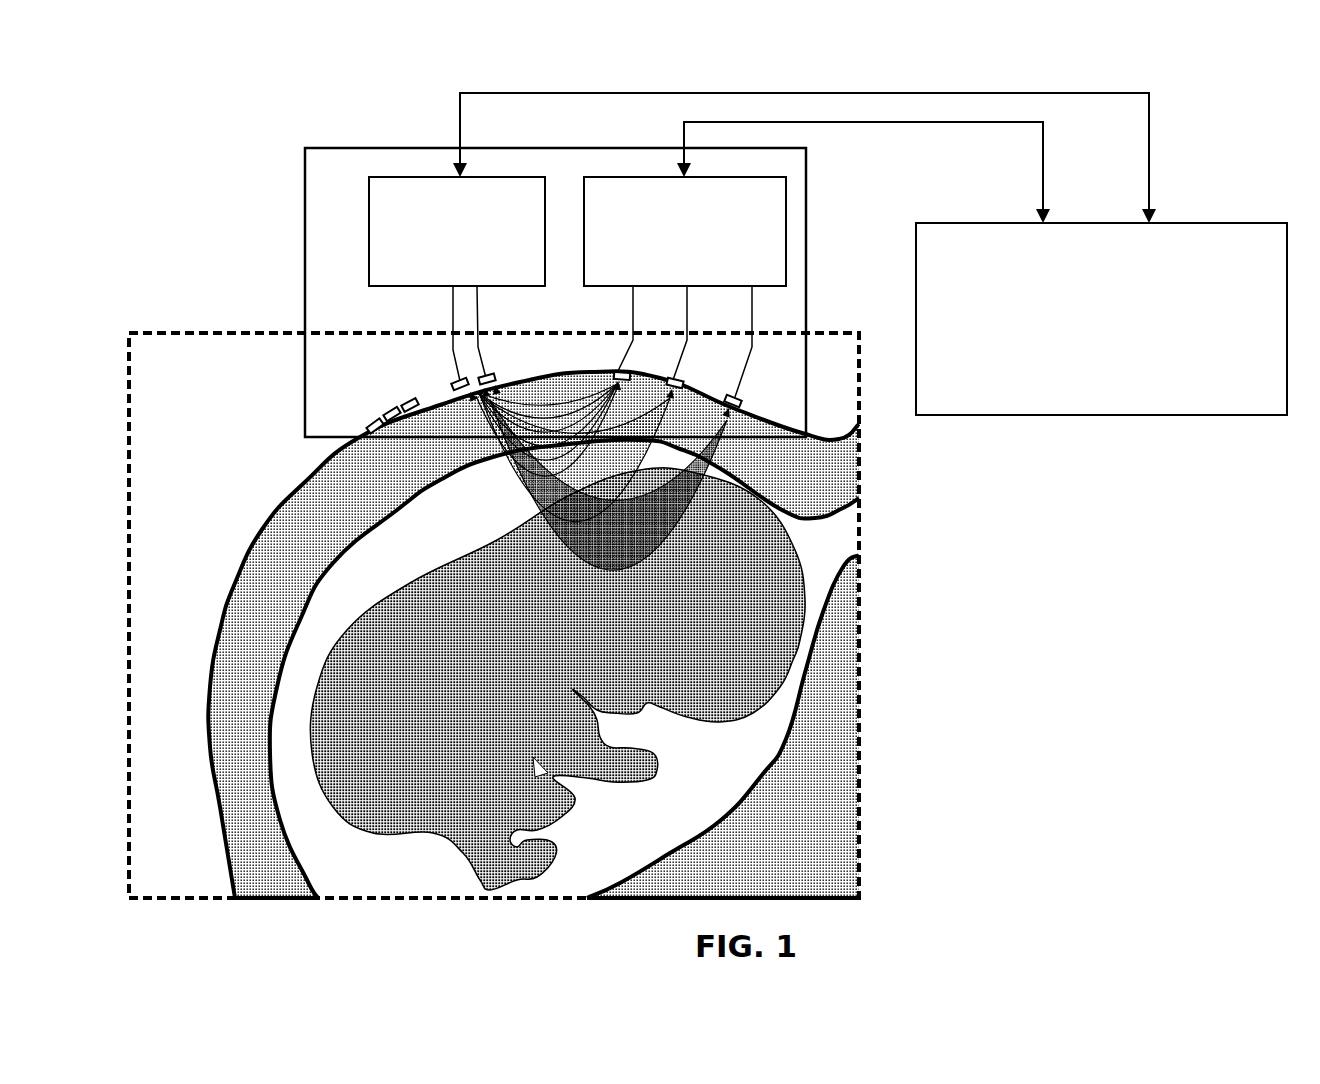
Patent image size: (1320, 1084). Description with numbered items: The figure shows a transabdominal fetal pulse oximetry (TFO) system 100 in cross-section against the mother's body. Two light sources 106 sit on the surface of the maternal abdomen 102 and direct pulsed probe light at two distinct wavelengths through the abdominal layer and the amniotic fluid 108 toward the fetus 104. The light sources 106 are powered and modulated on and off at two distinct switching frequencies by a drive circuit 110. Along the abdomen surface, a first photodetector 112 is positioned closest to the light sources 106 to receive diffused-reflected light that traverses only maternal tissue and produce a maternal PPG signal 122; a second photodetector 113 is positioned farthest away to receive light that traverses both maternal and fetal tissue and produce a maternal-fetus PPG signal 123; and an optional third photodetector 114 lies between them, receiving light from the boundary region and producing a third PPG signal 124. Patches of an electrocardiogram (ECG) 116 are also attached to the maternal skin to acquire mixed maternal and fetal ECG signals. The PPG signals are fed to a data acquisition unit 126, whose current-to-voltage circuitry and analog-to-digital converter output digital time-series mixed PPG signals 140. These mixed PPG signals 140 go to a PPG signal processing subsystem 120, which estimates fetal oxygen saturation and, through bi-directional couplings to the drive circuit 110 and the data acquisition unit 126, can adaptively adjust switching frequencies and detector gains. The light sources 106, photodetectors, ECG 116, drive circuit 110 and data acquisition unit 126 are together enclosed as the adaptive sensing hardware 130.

The transabdominal fetal pulse oximetry (TFO) system 100 is at (1028, 66).
The maternal abdomen 102 is at (348, 503).
The fetus 104 is at (557, 679).
The light sources 106 is at (483, 375).
The amniotic fluid 108 is at (353, 588).
The drive circuit 110 is at (457, 231).
The first photodetector 112 is at (614, 370).
The second photodetector 113 is at (742, 397).
The third photodetector 114 is at (683, 378).
The electrocardiogram (ECG) 116 is at (409, 402).
The PPG signal processing subsystem 120 is at (1101, 319).
The maternal PPG signal 122 is at (632, 323).
The maternal-fetus PPG signal 123 is at (751, 323).
The third PPG signal 124 is at (686, 323).
The data acquisition unit 126 is at (685, 231).
The adaptive sensing hardware 130 is at (308, 236).
The mixed PPG signals 140 is at (819, 123).